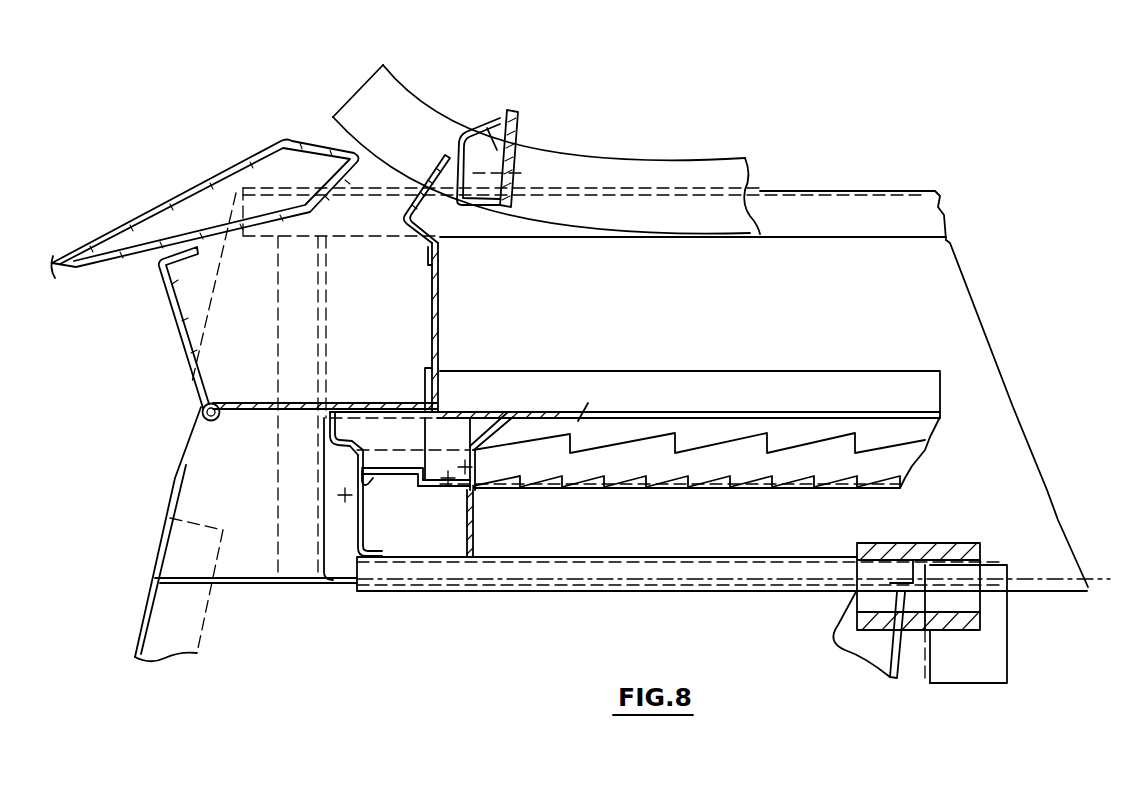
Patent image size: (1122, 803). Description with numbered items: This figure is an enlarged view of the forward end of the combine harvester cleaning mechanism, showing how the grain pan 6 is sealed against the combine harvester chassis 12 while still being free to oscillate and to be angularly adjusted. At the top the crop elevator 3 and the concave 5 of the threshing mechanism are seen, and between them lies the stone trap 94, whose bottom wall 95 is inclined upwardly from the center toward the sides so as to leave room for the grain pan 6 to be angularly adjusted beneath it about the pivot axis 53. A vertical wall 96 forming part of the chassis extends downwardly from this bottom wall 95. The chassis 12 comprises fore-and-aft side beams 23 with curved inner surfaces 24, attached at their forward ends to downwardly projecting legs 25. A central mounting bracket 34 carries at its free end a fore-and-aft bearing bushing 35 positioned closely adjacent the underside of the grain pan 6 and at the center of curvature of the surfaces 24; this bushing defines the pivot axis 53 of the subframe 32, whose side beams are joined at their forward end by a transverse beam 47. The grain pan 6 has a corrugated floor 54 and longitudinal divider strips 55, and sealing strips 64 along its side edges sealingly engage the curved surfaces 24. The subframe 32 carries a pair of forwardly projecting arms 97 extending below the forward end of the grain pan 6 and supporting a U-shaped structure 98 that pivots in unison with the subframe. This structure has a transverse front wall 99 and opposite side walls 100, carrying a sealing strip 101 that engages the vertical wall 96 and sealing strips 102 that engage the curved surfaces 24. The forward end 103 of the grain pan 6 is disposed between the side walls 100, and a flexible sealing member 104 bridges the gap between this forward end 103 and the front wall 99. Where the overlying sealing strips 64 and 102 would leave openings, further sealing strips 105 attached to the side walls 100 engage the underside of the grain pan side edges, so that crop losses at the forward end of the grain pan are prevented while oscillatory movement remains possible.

The crop elevator 3 is at (93, 252).
The concave 5 is at (625, 169).
The side beams 23 is at (872, 191).
The curved inner surfaces 24 is at (875, 322).
The sealing strips 64 is at (673, 371).
The stone trap 94 is at (438, 333).
The bottom wall 95 is at (378, 403).
The sealing strip 102 is at (413, 444).
The sealing strips 105 is at (493, 430).
The divider strips 55 is at (860, 443).
The corrugated floor 54 is at (803, 478).
The grain pan 6 is at (723, 493).
The sealing strip 101 is at (325, 447).
The flexible sealing member 104 is at (402, 470).
The forward end 103 is at (440, 490).
The transverse front wall 99 is at (352, 515).
The side walls 100 is at (443, 546).
The U-shaped structure 98 is at (352, 535).
The bearing bushing 35 is at (930, 543).
The combine harvester chassis 12 is at (245, 584).
The downwardly projecting legs 25 is at (205, 633).
The vertical wall 96 is at (327, 560).
The forwardly projecting arms 97 is at (777, 593).
The transverse beam 47 is at (1007, 618).
The pivot axis 53 is at (1090, 587).
The subframe 32 is at (1007, 652).
The central mounting bracket 34 is at (900, 672).